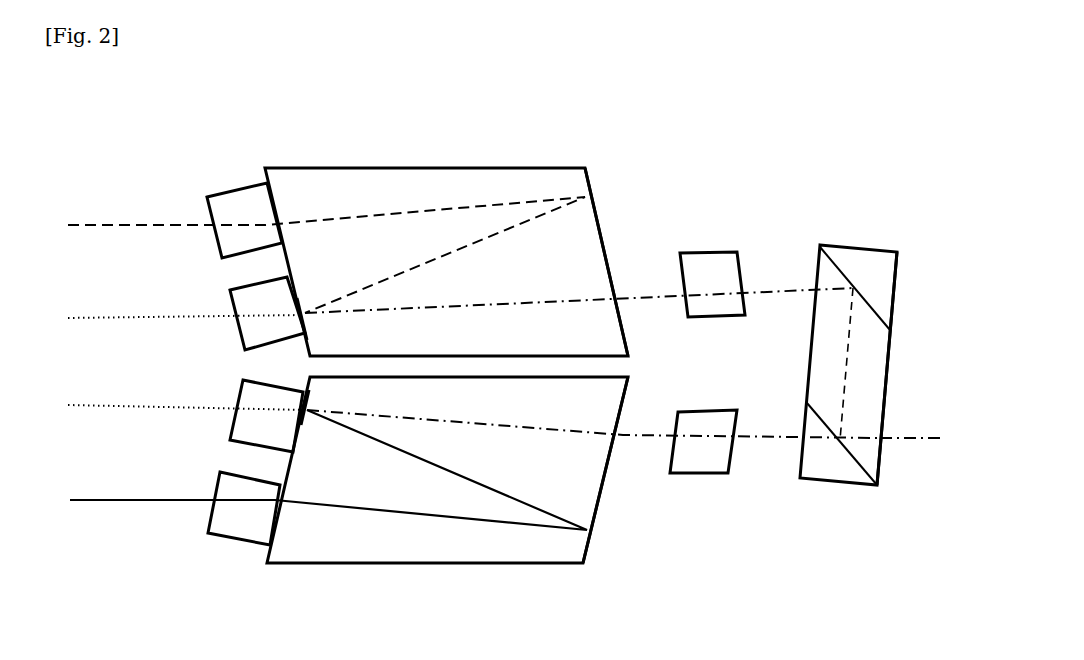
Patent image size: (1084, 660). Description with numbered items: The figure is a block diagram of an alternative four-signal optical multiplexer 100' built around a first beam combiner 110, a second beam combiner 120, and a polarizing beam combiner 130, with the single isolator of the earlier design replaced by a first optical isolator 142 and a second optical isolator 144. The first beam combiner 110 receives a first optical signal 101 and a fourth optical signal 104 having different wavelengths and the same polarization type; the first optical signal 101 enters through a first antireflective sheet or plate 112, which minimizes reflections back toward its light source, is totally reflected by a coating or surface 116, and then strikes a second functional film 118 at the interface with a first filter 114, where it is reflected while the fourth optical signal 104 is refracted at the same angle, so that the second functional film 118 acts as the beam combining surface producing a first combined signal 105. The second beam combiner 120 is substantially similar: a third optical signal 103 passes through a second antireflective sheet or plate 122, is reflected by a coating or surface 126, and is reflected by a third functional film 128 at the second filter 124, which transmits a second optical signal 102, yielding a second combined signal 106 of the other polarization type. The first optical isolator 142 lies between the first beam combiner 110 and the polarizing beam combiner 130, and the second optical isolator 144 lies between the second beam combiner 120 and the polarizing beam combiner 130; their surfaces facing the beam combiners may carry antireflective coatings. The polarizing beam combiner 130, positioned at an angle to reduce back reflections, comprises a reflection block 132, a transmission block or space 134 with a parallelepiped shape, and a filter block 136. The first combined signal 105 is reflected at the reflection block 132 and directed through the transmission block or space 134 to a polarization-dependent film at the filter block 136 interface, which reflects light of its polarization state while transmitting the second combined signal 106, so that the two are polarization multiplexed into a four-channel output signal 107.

The optical multiplexer 100' is at (513, 348).
The first optical signal 101 is at (131, 224).
The second optical signal 102 is at (131, 405).
The third optical signal 103 is at (131, 497).
The fourth optical signal 104 is at (131, 318).
The first combined signal 105 is at (561, 300).
The second combined signal 106 is at (563, 432).
The four-wave output signal 107 is at (922, 443).
The first beam combiner 110 is at (435, 168).
The first antireflective sheet or plate 112 is at (233, 183).
The first filter 114 is at (237, 340).
The coating or surface 116 is at (611, 248).
The second functional film 118 is at (310, 316).
The second beam combiner 120 is at (433, 568).
The second antireflective sheet or plate 122 is at (230, 545).
The second filter 124 is at (237, 385).
The coating or surface 126 is at (609, 487).
The third functional film 128 is at (313, 410).
The polarizing beam combiner 130 is at (848, 209).
The reflection block 132 is at (877, 257).
The transmission block or space 134 is at (880, 377).
The filter block 136 is at (817, 472).
The first optical isolator 142 is at (709, 252).
The second optical isolator 144 is at (702, 477).